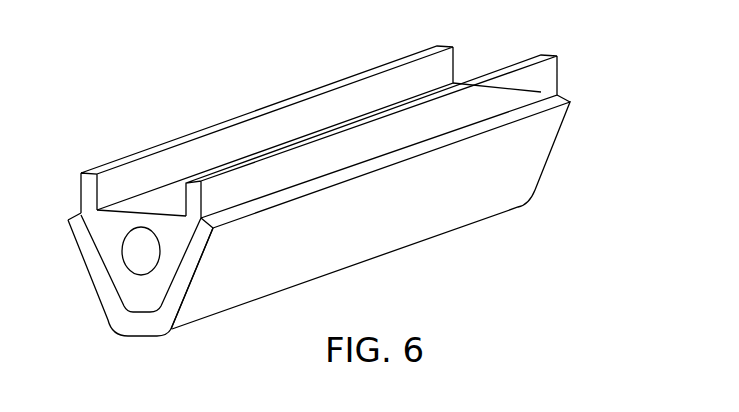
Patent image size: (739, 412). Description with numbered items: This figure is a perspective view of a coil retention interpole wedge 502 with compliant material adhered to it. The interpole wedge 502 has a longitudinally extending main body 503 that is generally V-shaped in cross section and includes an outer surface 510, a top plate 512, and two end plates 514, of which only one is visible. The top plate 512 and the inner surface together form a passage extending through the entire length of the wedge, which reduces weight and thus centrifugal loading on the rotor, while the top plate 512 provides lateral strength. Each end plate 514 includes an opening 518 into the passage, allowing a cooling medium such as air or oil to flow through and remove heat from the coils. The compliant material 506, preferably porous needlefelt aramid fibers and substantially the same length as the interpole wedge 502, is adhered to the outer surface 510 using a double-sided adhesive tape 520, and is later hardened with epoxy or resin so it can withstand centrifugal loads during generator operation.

The interpole wedge 502 is at (328, 189).
The main body 503 is at (333, 155).
The compliant material 506 is at (381, 234).
The outer surface 510 is at (553, 73).
The top plate 512 is at (142, 202).
The end plate 514 is at (132, 303).
The opening 518 is at (130, 252).
The double-sided adhesive tape 520 is at (190, 250).